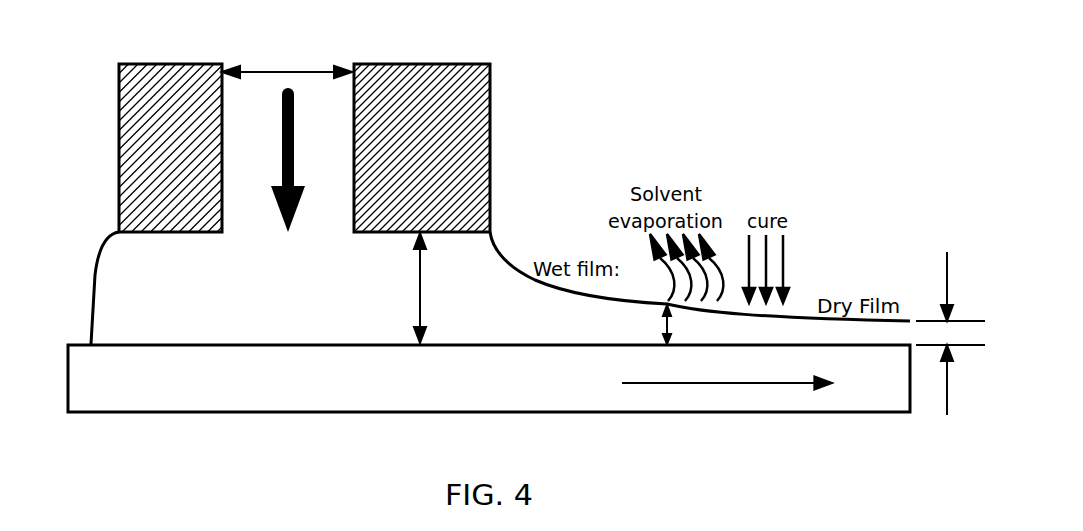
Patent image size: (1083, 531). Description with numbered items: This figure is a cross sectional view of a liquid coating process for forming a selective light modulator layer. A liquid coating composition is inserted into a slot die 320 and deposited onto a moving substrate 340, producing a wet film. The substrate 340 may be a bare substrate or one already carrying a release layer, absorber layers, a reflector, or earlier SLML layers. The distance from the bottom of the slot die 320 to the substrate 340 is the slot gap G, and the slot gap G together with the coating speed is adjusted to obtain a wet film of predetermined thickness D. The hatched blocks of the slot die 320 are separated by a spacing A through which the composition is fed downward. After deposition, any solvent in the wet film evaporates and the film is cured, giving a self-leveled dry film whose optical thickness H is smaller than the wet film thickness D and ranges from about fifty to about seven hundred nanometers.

The slot die 320 is at (420, 64).
The substrate 340 is at (120, 413).
The gap width between die blocks A is at (287, 62).
The slot gap G is at (428, 288).
The wet film thickness D is at (656, 324).
The dry film thickness H is at (950, 333).